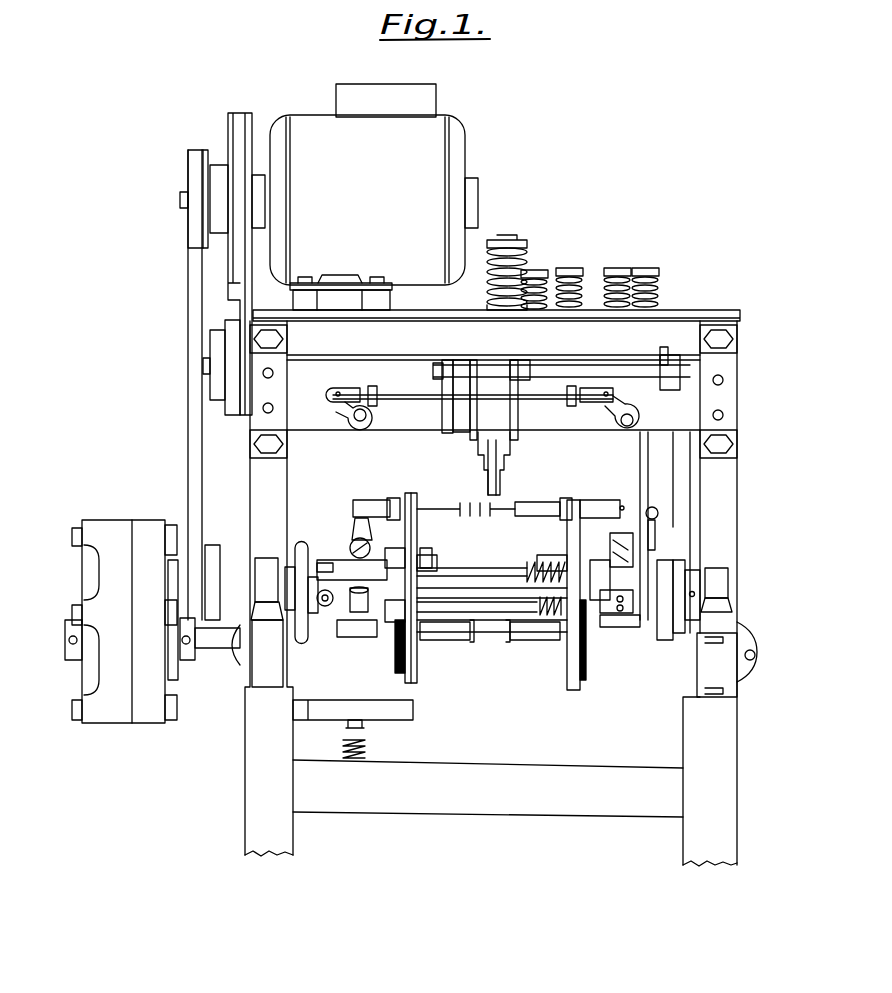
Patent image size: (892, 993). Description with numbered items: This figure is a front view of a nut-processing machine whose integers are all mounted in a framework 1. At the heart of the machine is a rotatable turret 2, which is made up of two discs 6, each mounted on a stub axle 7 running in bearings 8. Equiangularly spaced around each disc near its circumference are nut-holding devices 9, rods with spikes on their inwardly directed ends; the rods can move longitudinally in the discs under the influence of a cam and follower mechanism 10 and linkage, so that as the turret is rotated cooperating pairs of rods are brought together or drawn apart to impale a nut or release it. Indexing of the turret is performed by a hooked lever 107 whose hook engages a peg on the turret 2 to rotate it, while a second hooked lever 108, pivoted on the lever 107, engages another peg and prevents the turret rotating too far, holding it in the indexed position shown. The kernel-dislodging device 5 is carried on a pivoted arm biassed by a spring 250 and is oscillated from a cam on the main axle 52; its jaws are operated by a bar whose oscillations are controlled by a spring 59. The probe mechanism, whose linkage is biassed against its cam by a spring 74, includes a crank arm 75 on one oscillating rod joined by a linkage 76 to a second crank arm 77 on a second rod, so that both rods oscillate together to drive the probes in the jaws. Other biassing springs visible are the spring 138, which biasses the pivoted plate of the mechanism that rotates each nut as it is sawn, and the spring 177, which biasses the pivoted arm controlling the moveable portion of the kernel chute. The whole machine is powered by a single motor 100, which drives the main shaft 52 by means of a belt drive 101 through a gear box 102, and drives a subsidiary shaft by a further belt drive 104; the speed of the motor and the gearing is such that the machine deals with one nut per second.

The framework 1 is at (478, 800).
The rotatable turret 2 is at (490, 628).
The kernel-dislodging device 5 is at (512, 447).
The discs 6 is at (425, 535).
The stub axle 7 is at (345, 587).
The bearings 8 is at (264, 560).
The nut-holding devices 9 is at (448, 507).
The cam and follower mechanism 10 is at (321, 618).
The main shaft 52 is at (217, 643).
The spring 59 is at (572, 267).
The spring 74 is at (535, 270).
The crank arm 75 is at (605, 418).
The linkage 76 is at (428, 393).
The second crank arm 77 is at (350, 415).
The motor 100 is at (428, 147).
The belt drive 101 is at (199, 342).
The gear box 102 is at (113, 542).
The belt drive 104 is at (237, 295).
The hooked lever 107 is at (667, 640).
The second hooked lever 108 is at (672, 566).
The spring 138 is at (615, 268).
The spring 177 is at (643, 268).
The spring 250 is at (507, 240).